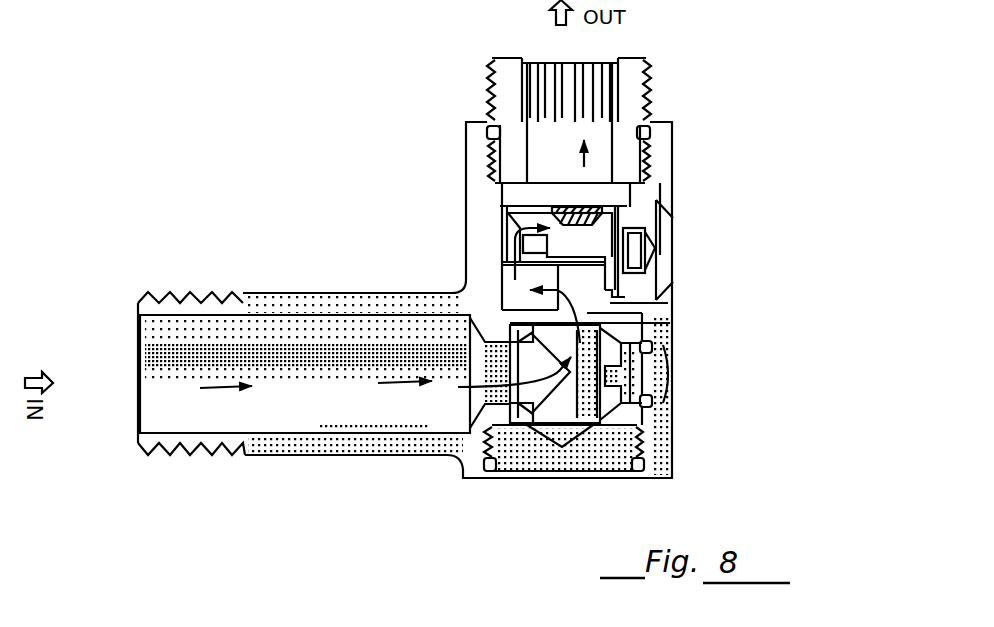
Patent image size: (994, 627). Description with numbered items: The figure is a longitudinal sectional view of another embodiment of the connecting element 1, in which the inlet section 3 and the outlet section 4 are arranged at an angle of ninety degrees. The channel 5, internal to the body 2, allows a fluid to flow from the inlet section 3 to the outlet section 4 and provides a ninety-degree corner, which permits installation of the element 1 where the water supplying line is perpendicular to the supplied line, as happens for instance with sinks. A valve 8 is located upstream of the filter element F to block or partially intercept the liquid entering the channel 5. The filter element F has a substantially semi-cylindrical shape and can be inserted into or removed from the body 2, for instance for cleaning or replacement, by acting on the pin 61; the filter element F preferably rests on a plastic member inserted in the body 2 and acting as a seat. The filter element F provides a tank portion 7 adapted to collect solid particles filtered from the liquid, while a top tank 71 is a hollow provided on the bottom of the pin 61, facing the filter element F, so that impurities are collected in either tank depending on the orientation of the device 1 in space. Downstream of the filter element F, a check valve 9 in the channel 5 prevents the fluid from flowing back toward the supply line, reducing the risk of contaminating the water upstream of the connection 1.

The connecting element 1 is at (728, 267).
The body 2 is at (402, 452).
The inlet section 3 is at (162, 355).
The outlet section 4 is at (583, 82).
The channel 5 is at (300, 411).
The bottom tank 7 is at (575, 207).
The valve 8 is at (573, 393).
The check valve 9 is at (628, 105).
The pin 61 is at (665, 272).
The top tank 71 is at (633, 252).
The filter element F is at (592, 250).